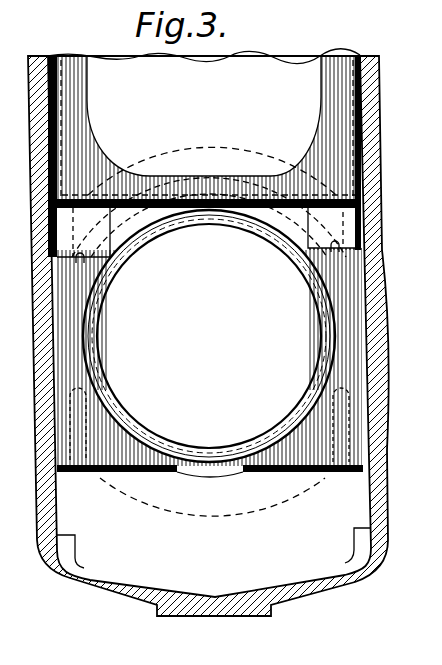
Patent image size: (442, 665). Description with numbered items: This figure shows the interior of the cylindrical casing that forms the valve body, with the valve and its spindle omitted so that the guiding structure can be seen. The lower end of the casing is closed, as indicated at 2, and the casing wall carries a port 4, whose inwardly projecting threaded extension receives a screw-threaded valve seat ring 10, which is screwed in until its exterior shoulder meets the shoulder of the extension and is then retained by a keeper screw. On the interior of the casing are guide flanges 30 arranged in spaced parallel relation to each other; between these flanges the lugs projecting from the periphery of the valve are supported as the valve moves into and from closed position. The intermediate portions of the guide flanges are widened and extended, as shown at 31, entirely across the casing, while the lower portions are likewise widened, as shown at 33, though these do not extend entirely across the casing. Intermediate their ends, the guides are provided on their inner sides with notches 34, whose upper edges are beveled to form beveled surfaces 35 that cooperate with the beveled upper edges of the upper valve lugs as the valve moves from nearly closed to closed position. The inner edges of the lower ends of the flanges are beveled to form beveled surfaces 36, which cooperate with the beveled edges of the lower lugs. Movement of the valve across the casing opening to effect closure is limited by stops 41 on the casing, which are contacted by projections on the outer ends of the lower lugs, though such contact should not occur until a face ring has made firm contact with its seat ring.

The closed lower end 2 is at (100, 598).
The port 4 is at (12, 118).
The valve seat ring 10 is at (220, 236).
The guide flange 30 is at (70, 98).
The widened intermediate portion 31 is at (200, 185).
The widened lower portion 33 is at (210, 340).
The notch 34 is at (90, 268).
The beveled surface 35 is at (112, 222).
The beveled surface 36 is at (100, 475).
The stop 41 is at (76, 541).